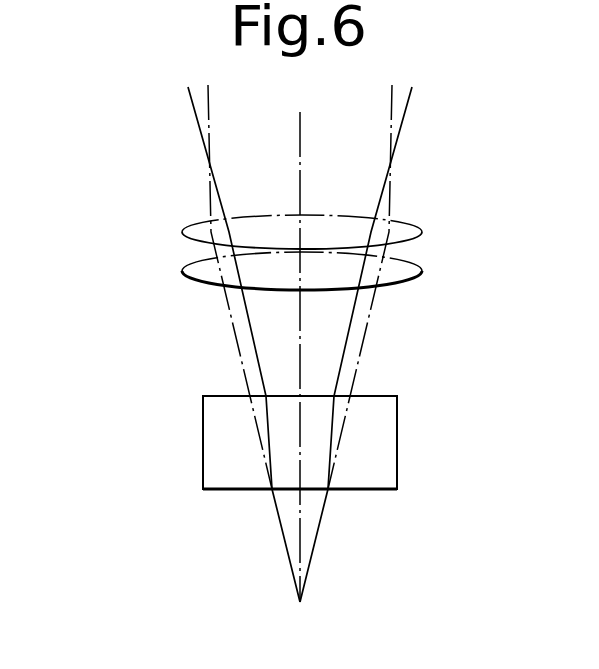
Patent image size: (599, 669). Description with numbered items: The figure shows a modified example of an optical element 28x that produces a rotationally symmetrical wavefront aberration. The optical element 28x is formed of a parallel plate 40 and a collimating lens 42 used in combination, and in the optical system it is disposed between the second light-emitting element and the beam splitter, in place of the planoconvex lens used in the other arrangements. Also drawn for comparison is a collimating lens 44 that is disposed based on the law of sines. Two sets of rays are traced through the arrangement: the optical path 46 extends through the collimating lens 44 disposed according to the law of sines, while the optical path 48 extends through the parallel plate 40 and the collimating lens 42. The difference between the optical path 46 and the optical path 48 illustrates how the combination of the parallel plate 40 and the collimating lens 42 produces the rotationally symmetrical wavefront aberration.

The optical element 28x is at (148, 209).
The parallel plate 40 is at (377, 447).
The collimating lens 42 is at (403, 268).
The collimating lens disposed based on the law of sines 44 is at (402, 233).
The optical path 46 is at (378, 122).
The optical path 48 is at (342, 360).